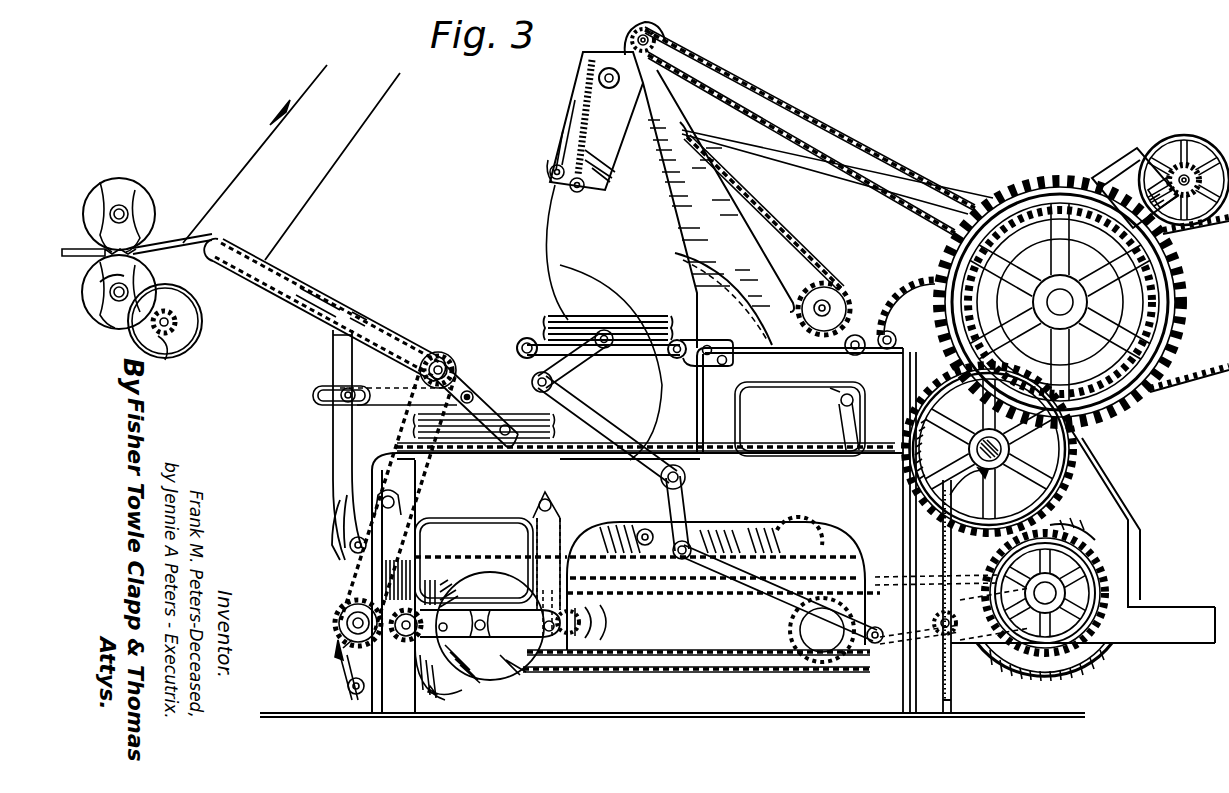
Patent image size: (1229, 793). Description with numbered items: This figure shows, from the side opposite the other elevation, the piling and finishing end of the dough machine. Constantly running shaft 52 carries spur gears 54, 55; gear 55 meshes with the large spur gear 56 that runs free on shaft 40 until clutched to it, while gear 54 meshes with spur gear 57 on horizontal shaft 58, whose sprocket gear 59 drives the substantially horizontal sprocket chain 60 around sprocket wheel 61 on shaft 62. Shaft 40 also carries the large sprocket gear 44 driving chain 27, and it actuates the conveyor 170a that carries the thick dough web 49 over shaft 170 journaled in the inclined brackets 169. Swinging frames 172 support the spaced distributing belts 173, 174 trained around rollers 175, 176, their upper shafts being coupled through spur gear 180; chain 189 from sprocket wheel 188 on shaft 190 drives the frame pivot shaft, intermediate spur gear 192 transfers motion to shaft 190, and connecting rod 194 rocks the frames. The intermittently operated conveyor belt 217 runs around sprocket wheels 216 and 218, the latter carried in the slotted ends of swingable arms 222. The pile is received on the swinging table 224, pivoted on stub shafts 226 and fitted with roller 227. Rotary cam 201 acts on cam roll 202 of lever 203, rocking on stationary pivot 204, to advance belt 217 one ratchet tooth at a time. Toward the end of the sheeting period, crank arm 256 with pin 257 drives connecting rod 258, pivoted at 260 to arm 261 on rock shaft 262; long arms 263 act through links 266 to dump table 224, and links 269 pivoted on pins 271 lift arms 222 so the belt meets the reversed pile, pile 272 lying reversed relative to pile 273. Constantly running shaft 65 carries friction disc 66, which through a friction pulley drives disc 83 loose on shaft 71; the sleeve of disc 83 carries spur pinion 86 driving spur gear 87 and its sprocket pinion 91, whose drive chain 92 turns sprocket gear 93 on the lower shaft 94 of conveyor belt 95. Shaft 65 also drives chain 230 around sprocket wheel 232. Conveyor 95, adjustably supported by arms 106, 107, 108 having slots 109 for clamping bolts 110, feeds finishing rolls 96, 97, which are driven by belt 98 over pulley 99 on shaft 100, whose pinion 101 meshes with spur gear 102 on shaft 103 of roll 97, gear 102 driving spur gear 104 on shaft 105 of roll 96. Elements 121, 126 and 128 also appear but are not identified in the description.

The spur gear 104 is at (102, 190).
The finishing roll 96 is at (119, 180).
The shaft of roll 96 105 is at (126, 208).
The spur gear 102 is at (150, 252).
The finishing roll 97 is at (102, 320).
The shaft of roll 97 103 is at (126, 292).
The pulley 99 is at (190, 345).
The shaft 100 is at (176, 323).
The pinion 101 is at (167, 360).
The conveyor belt 95 is at (345, 308).
The belt 98 is at (322, 176).
The lower shaft of conveyor belt 95 94 is at (437, 357).
The sprocket gear 93 is at (455, 356).
The arm 108 is at (478, 384).
The clamping bolt 110 is at (345, 390).
The arm 107 is at (378, 382).
The slot 109 is at (312, 395).
The arm 106 is at (333, 437).
The sprocket wheel 216 is at (333, 538).
The drive chain 92 is at (420, 500).
The sprocket pinion 91 is at (334, 608).
The spur gear 87 is at (340, 648).
The chain run 128 is at (348, 668).
The roller 126 is at (348, 688).
The spur pinion 86 is at (405, 642).
The friction disc 66 is at (505, 678).
The disc 83 is at (450, 680).
The shaft 65 is at (480, 620).
The shaft 71 is at (443, 620).
The sprocket wheel 61 is at (585, 612).
The horizontal shaft 62 is at (592, 630).
The sprocket chain 60 is at (712, 648).
The chain 230 is at (752, 668).
The sprocket wheel 232 is at (832, 660).
The conveyor belt 217 is at (628, 450).
The swingable arm 222 is at (762, 520).
The sprocket wheel 218 is at (830, 530).
The pin 271 is at (606, 528).
The link 269 is at (644, 528).
The arm 261 is at (690, 498).
The shaft 262 is at (686, 477).
The pivotal connection 260 is at (683, 562).
The connecting rod 258 is at (765, 596).
The pin 257 is at (882, 630).
The crank arm 256 is at (884, 576).
The sprocket gear 59 is at (945, 612).
The long arm 263 is at (598, 396).
The link 266 is at (570, 362).
The swinging table 224 is at (650, 356).
The roller 227 is at (525, 338).
The stub shaft 226 is at (688, 346).
The pile 273 is at (641, 318).
The pile 272 is at (520, 404).
The spur gear 180 is at (582, 56).
The pivot 121 is at (598, 78).
The swinging frame 172 is at (574, 123).
The distributing belt 174 is at (562, 146).
The roller 176 is at (550, 180).
The roller 175 is at (578, 193).
The distributing belt 173 is at (596, 172).
The bracket 169 is at (672, 236).
The shaft 170 is at (658, 32).
The web of dough sheet 49 is at (742, 78).
The conveyor 170a is at (800, 112).
The connecting rod 194 is at (779, 158).
The chain 189 is at (784, 222).
The sprocket wheel 188 is at (826, 296).
The shaft 190 is at (835, 298).
The spur gear 192 is at (905, 287).
The cam roll 202 is at (852, 353).
The rotary cam 201 is at (893, 360).
The stationary pivot 204 is at (840, 400).
The lever 203 is at (843, 425).
The spur gear 56 is at (1060, 180).
The shaft 40 is at (1052, 300).
The sprocket gear 44 is at (1140, 290).
The chain 27 is at (1213, 383).
The shaft 52 is at (1003, 452).
The spur gear 55 is at (992, 475).
The spur gear 54 is at (1078, 460).
The spur gear 57 is at (1080, 532).
The horizontal shaft 58 is at (1064, 590).